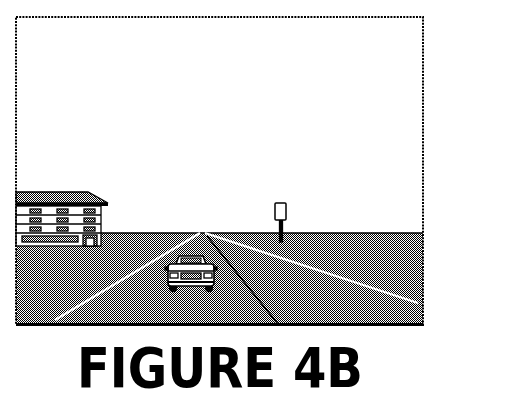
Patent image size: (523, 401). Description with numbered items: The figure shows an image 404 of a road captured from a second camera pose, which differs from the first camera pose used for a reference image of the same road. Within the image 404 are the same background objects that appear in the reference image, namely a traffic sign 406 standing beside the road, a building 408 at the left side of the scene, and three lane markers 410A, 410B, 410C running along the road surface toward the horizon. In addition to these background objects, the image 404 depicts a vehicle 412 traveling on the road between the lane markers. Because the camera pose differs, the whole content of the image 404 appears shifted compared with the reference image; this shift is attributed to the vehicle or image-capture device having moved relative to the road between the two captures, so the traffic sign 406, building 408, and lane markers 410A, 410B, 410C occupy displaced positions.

The image 404 is at (423, 265).
The traffic sign 406 is at (279, 202).
The building 408 is at (72, 193).
The lane marker 410A is at (122, 275).
The lane marker 410B is at (251, 289).
The lane marker 410C is at (292, 261).
The vehicle 412 is at (215, 277).